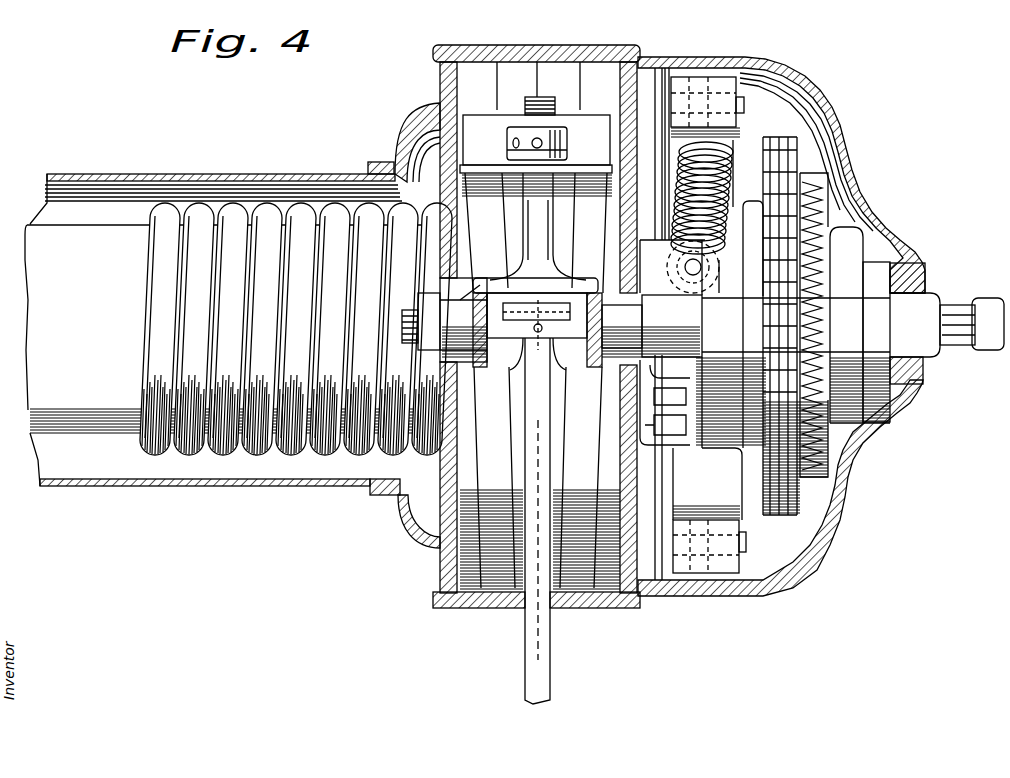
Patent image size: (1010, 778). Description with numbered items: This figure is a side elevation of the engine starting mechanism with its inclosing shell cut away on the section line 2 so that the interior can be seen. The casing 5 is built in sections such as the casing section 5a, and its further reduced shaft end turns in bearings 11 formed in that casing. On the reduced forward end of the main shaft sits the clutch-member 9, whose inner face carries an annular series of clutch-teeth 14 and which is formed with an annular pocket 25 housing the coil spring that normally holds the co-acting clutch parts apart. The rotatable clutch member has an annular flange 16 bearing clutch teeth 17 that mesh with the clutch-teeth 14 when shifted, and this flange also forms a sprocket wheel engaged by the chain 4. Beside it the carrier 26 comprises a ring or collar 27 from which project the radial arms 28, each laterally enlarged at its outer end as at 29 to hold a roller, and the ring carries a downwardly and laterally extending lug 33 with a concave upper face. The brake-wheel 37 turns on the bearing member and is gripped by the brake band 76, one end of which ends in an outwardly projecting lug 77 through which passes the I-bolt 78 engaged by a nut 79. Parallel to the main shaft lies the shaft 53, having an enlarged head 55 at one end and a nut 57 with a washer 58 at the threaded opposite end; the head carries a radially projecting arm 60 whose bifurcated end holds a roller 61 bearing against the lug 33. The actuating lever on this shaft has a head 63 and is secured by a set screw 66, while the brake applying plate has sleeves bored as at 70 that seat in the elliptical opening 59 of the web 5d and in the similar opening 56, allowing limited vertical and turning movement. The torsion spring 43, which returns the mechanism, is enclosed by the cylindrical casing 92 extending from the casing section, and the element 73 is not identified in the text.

The section line 2 is at (472, 29).
The cylindrical casing 92 is at (210, 168).
The torsion spring 43 is at (305, 200).
The casing 5 is at (660, 60).
The casing section 5a is at (855, 180).
The web 5d is at (440, 572).
The slot or opening 56 is at (528, 47).
The brake band 76 is at (598, 62).
The I-bolt 78 is at (620, 126).
The nut 79 is at (520, 143).
The lug 77 is at (555, 149).
The bore 70 is at (488, 367).
The piston 73 is at (540, 278).
The slot or opening 59 is at (462, 296).
The washer 58 is at (448, 295).
The shaft 53 is at (402, 323).
The nut 57 is at (425, 350).
The enlarged portion or head 55 is at (652, 326).
The set screw 66 is at (540, 330).
The head 63 is at (538, 478).
The lug 33 is at (690, 422).
The ring or collar 27 is at (796, 330).
The radially projecting arm 60 is at (436, 492).
The roller 61 is at (686, 398).
The laterally enlarged end 29 is at (707, 107).
The radial arms 28 is at (709, 529).
The brake-wheel 37 is at (690, 470).
The carrier 26 is at (730, 148).
The annular pocket 25 is at (720, 190).
The chain 4 is at (781, 317).
The annular flange 16 is at (805, 200).
The clutch teeth 17 is at (815, 220).
The clutch-teeth 14 is at (840, 202).
The clutch-member 9 is at (860, 325).
The bearings 11 is at (925, 280).